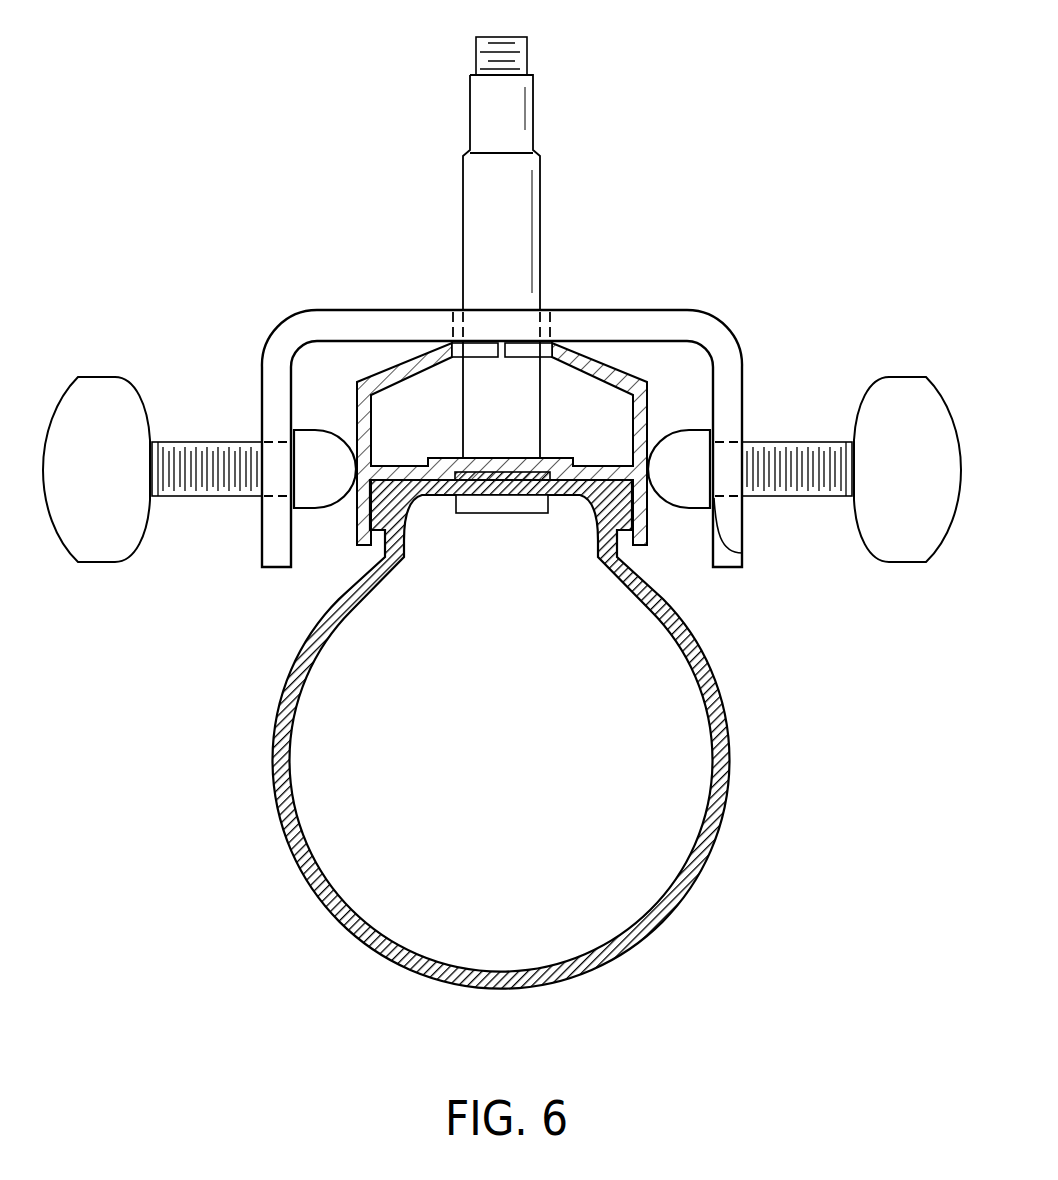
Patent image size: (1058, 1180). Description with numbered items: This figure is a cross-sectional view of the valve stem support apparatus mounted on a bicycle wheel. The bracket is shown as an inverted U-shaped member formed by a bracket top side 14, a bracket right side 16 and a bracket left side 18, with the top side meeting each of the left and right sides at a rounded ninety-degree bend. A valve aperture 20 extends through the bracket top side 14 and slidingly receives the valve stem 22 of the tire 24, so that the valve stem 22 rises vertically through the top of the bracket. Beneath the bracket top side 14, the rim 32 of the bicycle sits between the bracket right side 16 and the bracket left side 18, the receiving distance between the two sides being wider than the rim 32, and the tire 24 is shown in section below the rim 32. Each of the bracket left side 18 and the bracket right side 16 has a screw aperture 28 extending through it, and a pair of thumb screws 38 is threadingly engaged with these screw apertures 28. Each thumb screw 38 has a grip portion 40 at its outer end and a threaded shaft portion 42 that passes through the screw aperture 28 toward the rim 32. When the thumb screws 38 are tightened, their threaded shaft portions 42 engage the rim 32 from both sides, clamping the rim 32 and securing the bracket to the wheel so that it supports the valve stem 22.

The bracket top side 14 is at (498, 408).
The bracket right side 16 is at (742, 396).
The bracket left side 18 is at (262, 370).
The valve aperture 20 is at (551, 325).
The valve stem 22 is at (526, 198).
The tire 24 is at (724, 722).
The screw aperture 28 is at (743, 555).
The rim 32 is at (623, 375).
The thumb screw 38 is at (810, 463).
The grip portion 40 is at (101, 532).
The threaded shaft portion 42 is at (193, 477).